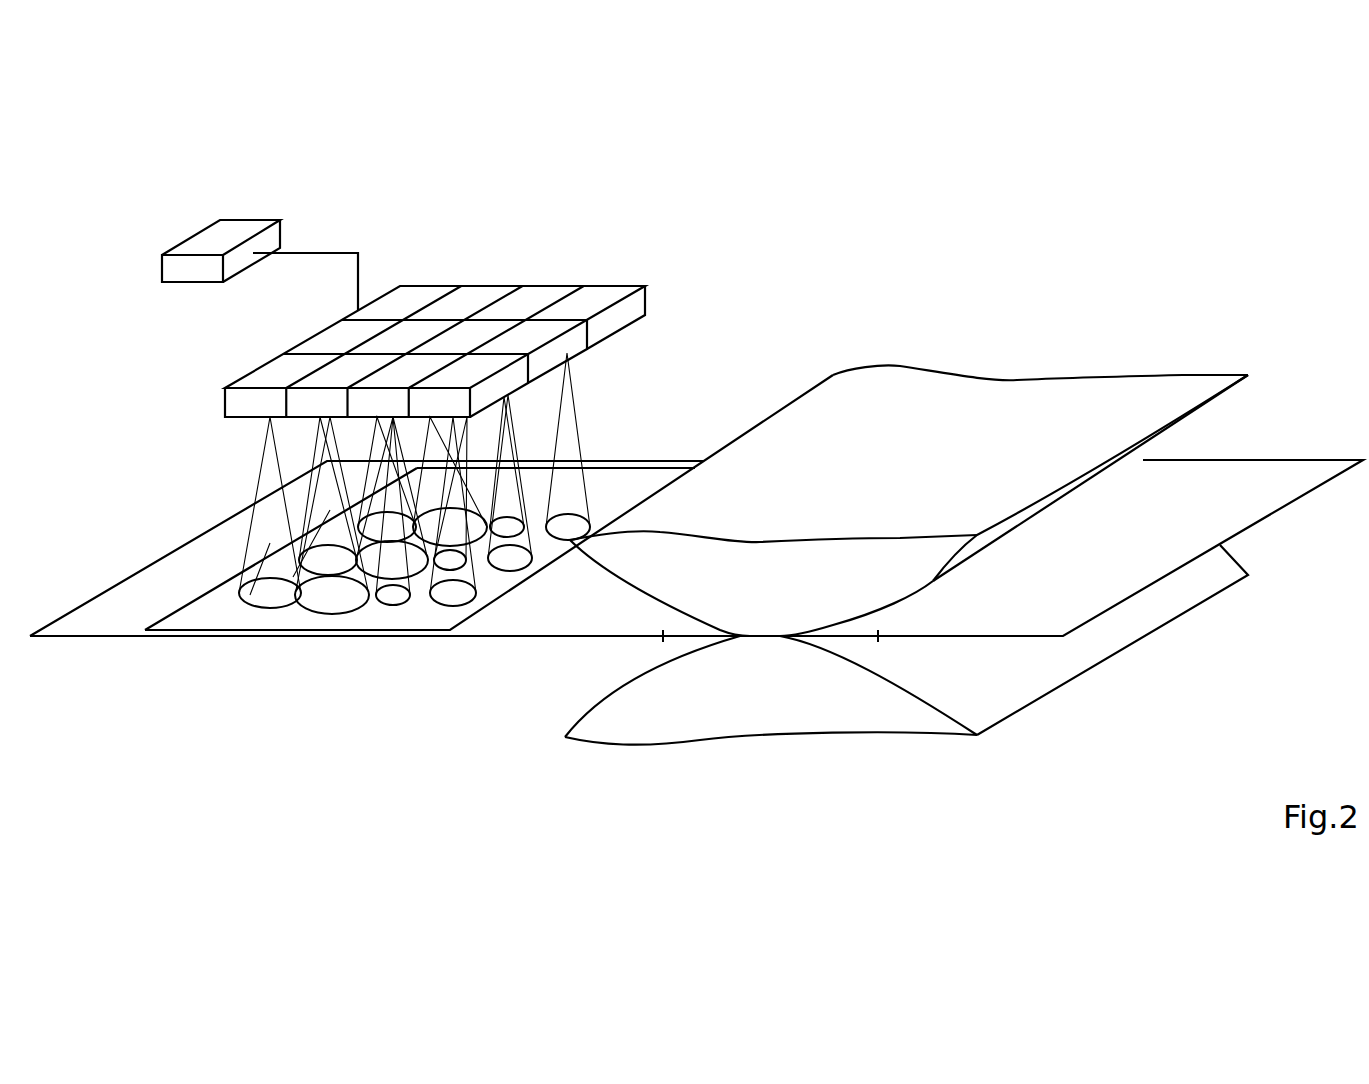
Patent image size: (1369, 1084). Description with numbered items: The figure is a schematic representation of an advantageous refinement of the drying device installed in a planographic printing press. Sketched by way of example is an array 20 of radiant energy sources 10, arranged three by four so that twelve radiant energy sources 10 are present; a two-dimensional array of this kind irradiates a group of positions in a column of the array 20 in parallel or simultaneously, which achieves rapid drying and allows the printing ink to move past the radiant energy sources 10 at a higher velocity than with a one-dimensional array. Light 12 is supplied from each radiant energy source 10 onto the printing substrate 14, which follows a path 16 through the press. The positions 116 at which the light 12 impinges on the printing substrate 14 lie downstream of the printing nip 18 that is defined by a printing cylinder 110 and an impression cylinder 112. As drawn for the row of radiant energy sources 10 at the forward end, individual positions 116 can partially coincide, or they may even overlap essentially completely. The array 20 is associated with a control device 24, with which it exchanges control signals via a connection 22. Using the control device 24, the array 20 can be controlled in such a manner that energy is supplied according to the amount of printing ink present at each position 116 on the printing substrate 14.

The radiant energy source 10 is at (598, 295).
The light 12 is at (285, 505).
The printing substrate 14 is at (427, 615).
The path 16 is at (185, 518).
The nip 18 is at (693, 638).
The array 20 is at (672, 262).
The connection 22 is at (320, 253).
The control device 24 is at (210, 243).
The printing cylinder 110 is at (918, 398).
The impression cylinder 112 is at (672, 713).
The positions 116 is at (248, 593).